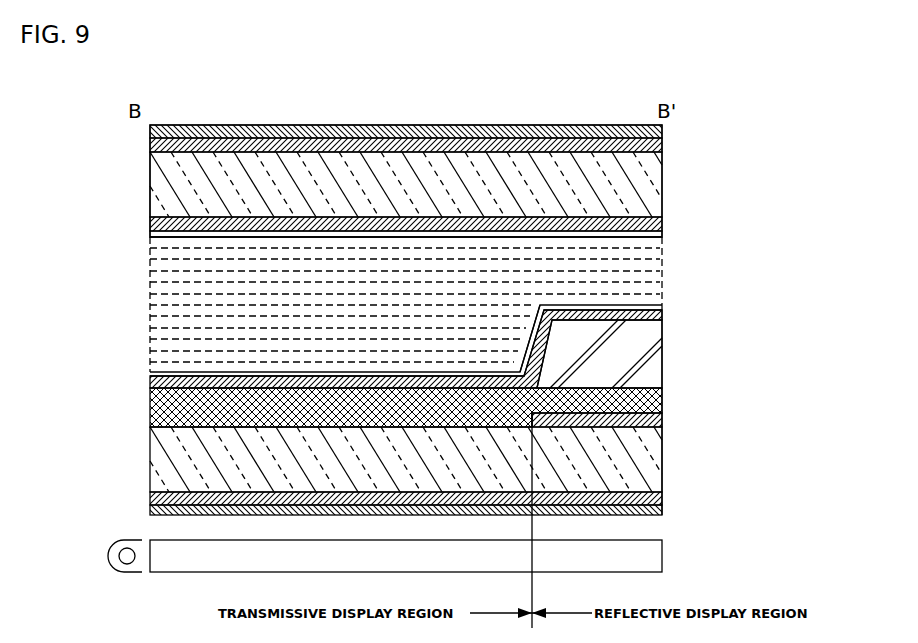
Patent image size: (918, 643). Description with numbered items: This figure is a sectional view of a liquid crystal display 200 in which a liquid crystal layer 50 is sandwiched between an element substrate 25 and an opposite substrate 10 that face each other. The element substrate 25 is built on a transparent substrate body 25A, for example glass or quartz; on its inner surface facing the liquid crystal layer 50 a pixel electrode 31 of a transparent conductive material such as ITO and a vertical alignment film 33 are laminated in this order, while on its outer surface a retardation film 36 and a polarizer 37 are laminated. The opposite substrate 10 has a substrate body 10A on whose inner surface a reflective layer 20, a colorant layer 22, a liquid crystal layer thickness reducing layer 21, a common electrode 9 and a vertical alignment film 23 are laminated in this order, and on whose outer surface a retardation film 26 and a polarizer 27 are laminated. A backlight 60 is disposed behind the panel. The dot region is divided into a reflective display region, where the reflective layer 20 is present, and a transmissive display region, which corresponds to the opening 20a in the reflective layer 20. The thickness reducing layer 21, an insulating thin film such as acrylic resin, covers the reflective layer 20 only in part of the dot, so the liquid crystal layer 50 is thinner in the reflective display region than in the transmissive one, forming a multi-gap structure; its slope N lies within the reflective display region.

The liquid crystal display 200 is at (572, 115).
The element substrate 25 is at (146, 125).
The polarizer 37 is at (662, 128).
The retardation film 36 is at (662, 146).
The substrate body 25A is at (654, 178).
The pixel electrode 31 is at (662, 224).
The vertical alignment film 33 is at (662, 234).
The liquid crystal layer 50 is at (640, 268).
The slope N is at (532, 336).
The opposite substrate 10 is at (146, 372).
The vertical alignment film 23 is at (662, 306).
The common electrode 9 is at (662, 316).
The liquid crystal layer thickness reducing layer 21 is at (648, 350).
The colorant layer 22 is at (662, 400).
The reflective layer 20 is at (662, 420).
The opening 20a is at (532, 425).
The substrate body 10A is at (654, 460).
The retardation film 26 is at (662, 498).
The polarizer 27 is at (662, 511).
The backlight 60 is at (650, 560).